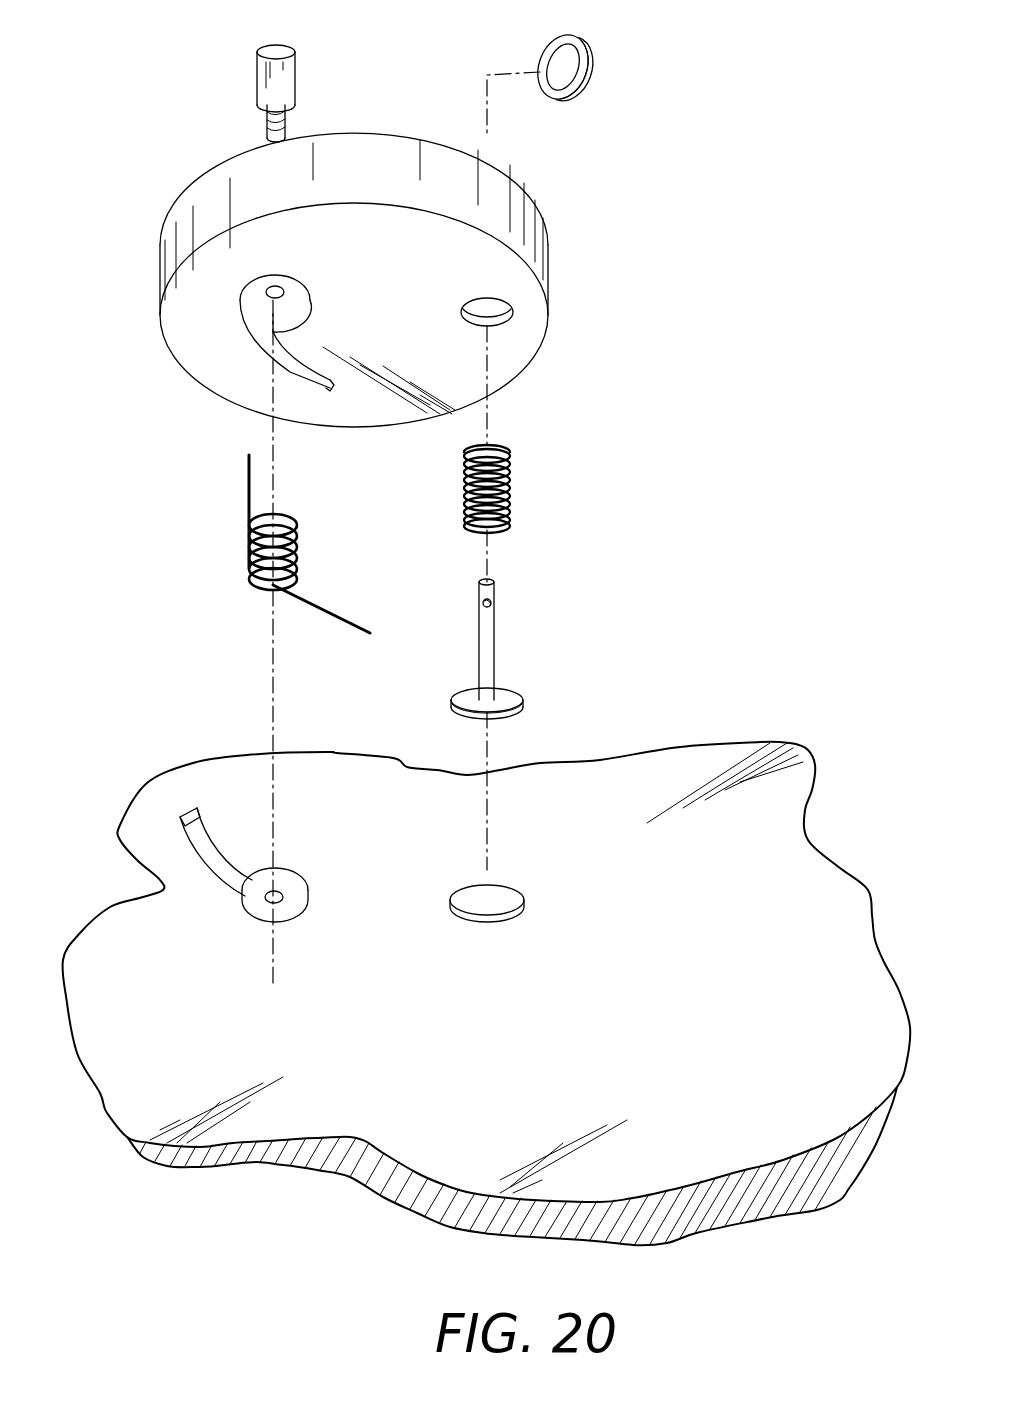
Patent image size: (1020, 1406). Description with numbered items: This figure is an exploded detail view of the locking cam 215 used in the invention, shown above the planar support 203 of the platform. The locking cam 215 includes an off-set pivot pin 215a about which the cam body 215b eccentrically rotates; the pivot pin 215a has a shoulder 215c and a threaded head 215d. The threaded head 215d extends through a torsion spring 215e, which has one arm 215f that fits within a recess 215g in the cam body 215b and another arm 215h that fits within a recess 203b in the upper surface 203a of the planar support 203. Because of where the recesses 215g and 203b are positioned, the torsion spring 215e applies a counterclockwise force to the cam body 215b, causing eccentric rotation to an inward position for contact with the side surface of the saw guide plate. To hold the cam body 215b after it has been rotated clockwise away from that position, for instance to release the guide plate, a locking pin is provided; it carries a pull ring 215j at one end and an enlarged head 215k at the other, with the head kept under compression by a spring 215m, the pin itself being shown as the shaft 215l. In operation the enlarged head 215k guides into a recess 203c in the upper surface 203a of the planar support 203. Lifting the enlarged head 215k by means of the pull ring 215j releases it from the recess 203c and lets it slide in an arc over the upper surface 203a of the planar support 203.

The planar support 203 is at (486, 965).
The upper surface 203a is at (634, 780).
The recess 203b is at (192, 812).
The recess 203c is at (626, 899).
The locking cam 215 is at (620, 455).
The off-set pivot pin 215a is at (265, 73).
The cam body 215b is at (548, 262).
The shoulder 215c is at (257, 108).
The threaded head 215d is at (268, 131).
The torsion spring 215e is at (289, 553).
The arm 215f is at (426, 598).
The recess 215g is at (292, 288).
The arm 215h is at (247, 507).
The pull ring 215j is at (590, 73).
The enlarged head 215k is at (542, 653).
The pin 215l is at (490, 650).
The spring 215m is at (512, 503).